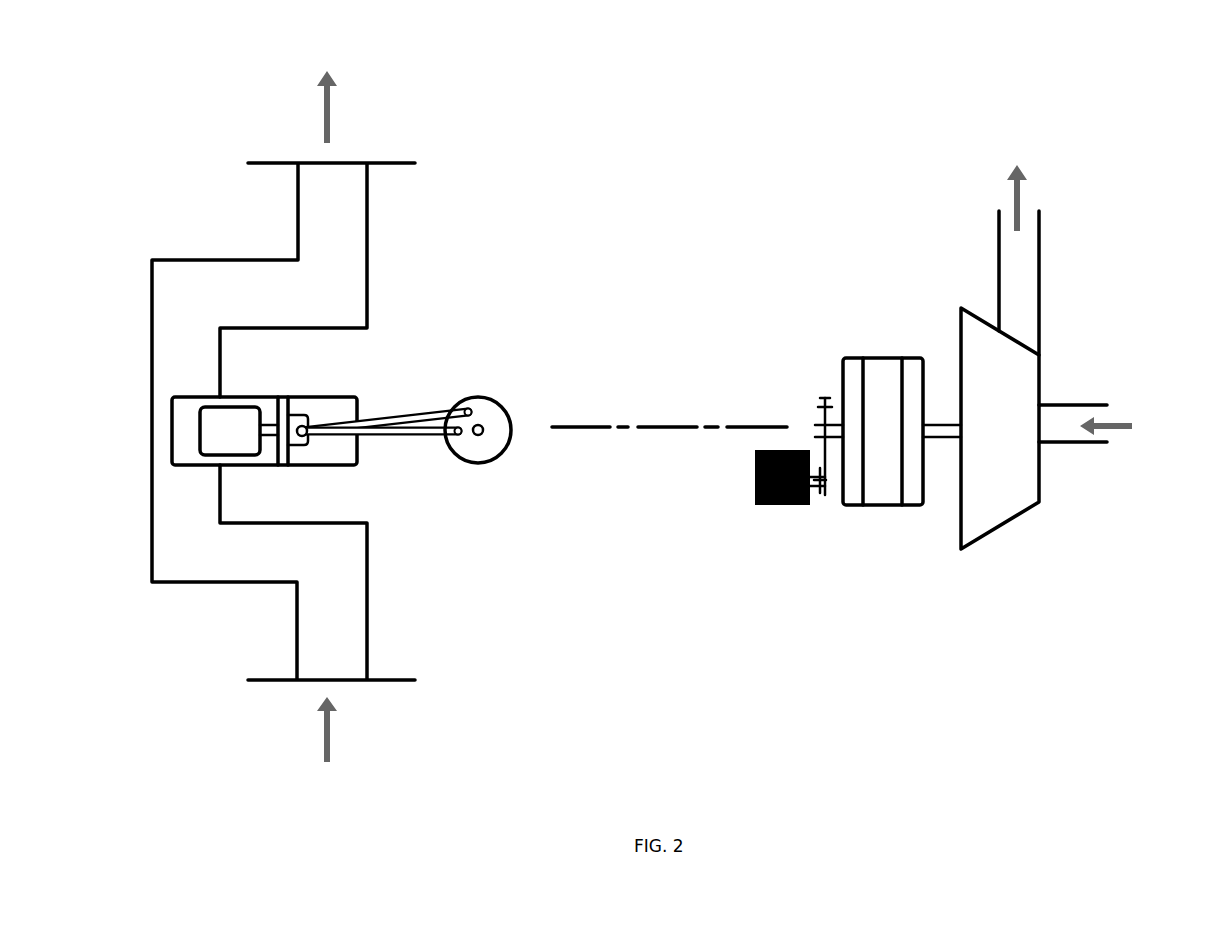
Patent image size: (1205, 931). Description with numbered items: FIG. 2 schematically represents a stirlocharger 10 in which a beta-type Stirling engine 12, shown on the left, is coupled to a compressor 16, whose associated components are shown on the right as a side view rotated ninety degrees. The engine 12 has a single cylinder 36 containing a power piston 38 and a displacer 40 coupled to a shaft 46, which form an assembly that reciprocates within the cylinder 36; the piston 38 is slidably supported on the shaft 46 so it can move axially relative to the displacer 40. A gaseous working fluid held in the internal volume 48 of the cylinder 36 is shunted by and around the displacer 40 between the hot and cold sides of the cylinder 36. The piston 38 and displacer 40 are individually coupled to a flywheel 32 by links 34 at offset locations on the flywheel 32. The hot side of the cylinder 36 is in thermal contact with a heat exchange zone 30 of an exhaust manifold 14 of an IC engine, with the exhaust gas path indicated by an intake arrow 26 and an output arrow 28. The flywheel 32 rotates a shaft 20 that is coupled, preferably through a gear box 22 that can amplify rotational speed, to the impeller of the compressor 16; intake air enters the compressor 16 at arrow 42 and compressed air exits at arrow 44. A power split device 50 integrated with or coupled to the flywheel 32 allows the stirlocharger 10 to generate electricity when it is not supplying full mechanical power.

The stirlocharger 10 is at (687, 127).
The beta-type Stirling engine 12 is at (370, 482).
The exhaust manifold 14 is at (180, 255).
The compressor 16 is at (1008, 525).
The shaft 20 is at (836, 423).
The gear box 22 is at (884, 373).
The intake arrow 26 is at (328, 741).
The output arrow 28 is at (328, 96).
The heat exchange zone 30 is at (212, 407).
The flywheel 32 is at (493, 418).
The links 34 is at (432, 428).
The cylinder 36 is at (183, 395).
The power piston 38 is at (300, 403).
The displacer 40 is at (232, 435).
The arrow 42 is at (1120, 427).
The arrow 44 is at (1017, 182).
The shaft 46 is at (267, 423).
The internal volume 48 is at (187, 435).
The power split device 50 is at (787, 497).